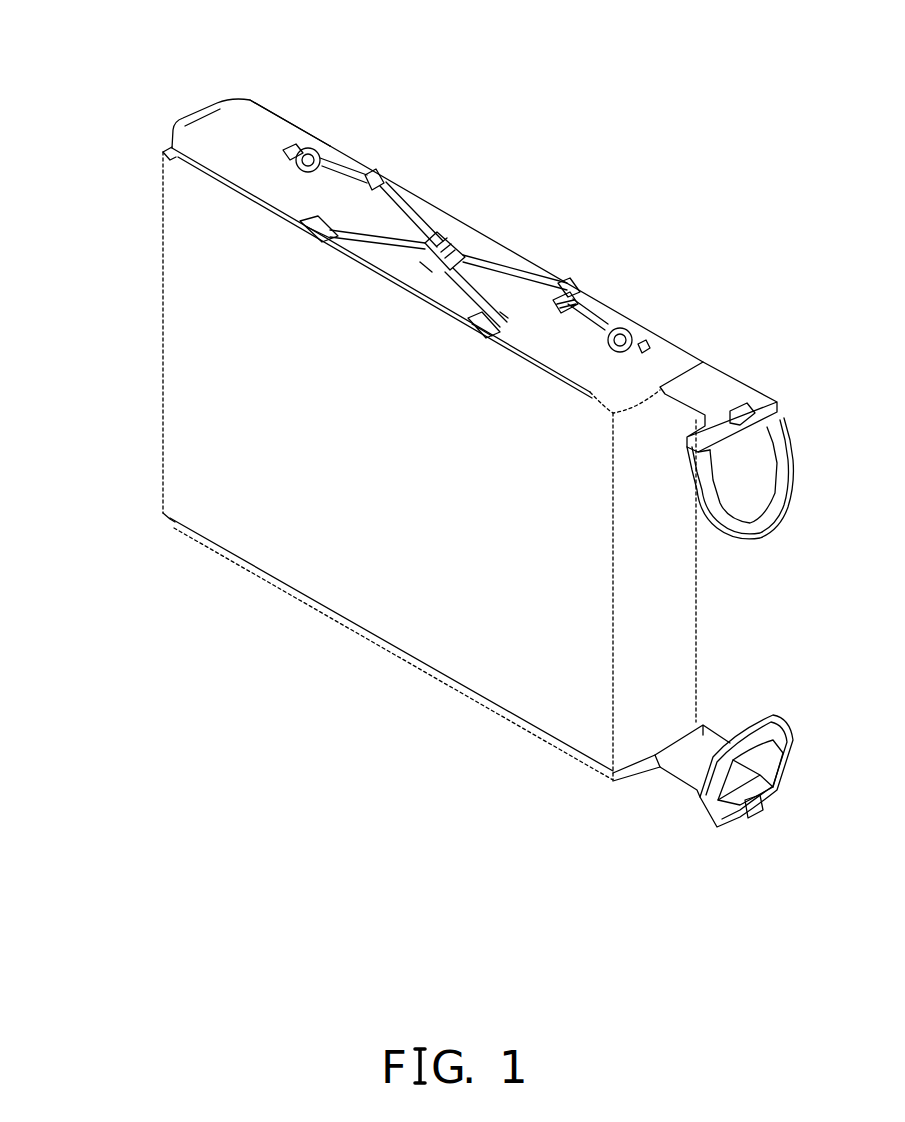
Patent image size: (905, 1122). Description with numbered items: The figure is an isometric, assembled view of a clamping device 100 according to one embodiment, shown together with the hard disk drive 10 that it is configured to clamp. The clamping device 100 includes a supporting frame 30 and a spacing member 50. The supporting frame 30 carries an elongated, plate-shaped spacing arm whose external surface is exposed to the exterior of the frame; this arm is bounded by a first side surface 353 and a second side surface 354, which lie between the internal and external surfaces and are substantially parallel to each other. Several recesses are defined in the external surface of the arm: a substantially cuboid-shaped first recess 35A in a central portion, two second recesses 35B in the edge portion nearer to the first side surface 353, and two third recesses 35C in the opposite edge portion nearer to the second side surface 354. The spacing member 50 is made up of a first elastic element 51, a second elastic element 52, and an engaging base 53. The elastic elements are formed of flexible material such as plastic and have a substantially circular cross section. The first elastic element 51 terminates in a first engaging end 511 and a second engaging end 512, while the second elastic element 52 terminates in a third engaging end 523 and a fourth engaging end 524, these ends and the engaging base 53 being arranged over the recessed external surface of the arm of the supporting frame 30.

The clamping device 100 is at (632, 92).
The hard disk drive 10 is at (185, 408).
The supporting frame 30 is at (223, 127).
The first side surface 353 is at (200, 170).
The second side surface 354 is at (277, 103).
The first recess 35A is at (413, 272).
The second recess 35B is at (510, 305).
The third recess 35C is at (372, 197).
The spacing member 50 is at (448, 232).
The first elastic element 51 is at (470, 290).
The first engaging end 511 is at (507, 295).
The second engaging end 512 is at (382, 180).
The second elastic element 52 is at (368, 233).
The third engaging end 523 is at (303, 222).
The fourth engaging end 524 is at (566, 292).
The engaging base 53 is at (407, 257).